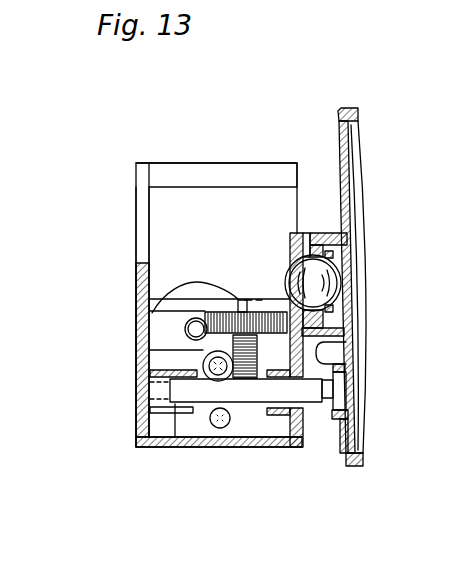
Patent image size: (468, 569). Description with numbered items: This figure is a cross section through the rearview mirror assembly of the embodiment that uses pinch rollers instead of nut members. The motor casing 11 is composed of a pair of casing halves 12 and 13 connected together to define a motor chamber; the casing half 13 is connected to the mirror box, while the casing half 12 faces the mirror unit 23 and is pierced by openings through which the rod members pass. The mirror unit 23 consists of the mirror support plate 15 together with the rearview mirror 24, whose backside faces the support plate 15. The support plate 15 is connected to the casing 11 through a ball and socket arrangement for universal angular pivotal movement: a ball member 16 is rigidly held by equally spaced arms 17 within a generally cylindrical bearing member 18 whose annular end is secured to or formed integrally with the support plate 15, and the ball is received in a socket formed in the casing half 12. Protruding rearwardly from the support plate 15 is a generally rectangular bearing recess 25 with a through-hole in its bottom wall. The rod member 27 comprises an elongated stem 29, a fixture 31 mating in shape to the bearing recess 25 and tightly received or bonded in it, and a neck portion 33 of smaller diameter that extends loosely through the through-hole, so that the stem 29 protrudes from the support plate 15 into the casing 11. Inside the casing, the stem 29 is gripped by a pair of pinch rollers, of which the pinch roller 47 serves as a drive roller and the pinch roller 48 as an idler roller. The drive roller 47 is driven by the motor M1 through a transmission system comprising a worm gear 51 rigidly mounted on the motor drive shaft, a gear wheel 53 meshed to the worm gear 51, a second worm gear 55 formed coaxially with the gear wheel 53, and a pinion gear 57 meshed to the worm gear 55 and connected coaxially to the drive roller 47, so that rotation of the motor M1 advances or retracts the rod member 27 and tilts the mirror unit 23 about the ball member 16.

The motor casing 11 is at (137, 197).
The casing half 12 is at (190, 170).
The casing half 13 is at (137, 228).
The mirror support plate 15 is at (339, 120).
The ball member 16 is at (328, 274).
The arms 17 is at (303, 244).
The bearing member 18 is at (336, 222).
The mirror unit 23 is at (370, 136).
The rearview mirror 24 is at (366, 212).
The bearing recess 25 is at (318, 355).
The rod member 27 is at (311, 412).
The stem 29 is at (284, 398).
The fixture 31 is at (346, 397).
The neck portion 33 is at (329, 387).
The pinch roller 47 is at (188, 443).
The pinch roller 48 is at (217, 429).
The worm gear 51 is at (186, 335).
The gear wheel 53 is at (210, 316).
The worm gear 55 is at (249, 383).
The pinion gear 57 is at (204, 355).
The motor M1 is at (163, 324).